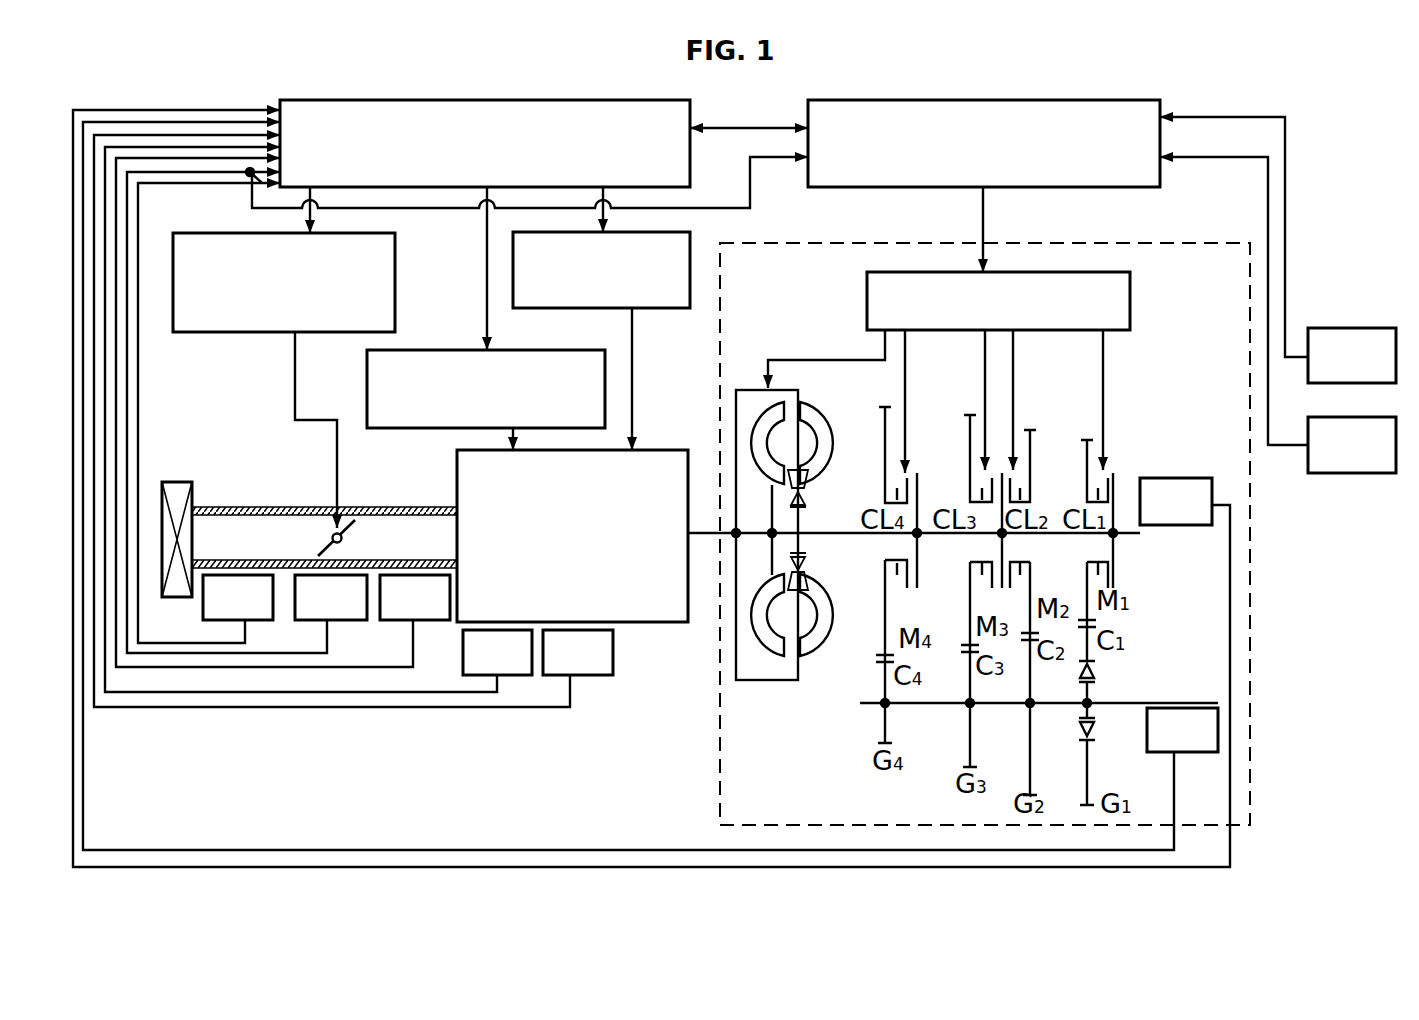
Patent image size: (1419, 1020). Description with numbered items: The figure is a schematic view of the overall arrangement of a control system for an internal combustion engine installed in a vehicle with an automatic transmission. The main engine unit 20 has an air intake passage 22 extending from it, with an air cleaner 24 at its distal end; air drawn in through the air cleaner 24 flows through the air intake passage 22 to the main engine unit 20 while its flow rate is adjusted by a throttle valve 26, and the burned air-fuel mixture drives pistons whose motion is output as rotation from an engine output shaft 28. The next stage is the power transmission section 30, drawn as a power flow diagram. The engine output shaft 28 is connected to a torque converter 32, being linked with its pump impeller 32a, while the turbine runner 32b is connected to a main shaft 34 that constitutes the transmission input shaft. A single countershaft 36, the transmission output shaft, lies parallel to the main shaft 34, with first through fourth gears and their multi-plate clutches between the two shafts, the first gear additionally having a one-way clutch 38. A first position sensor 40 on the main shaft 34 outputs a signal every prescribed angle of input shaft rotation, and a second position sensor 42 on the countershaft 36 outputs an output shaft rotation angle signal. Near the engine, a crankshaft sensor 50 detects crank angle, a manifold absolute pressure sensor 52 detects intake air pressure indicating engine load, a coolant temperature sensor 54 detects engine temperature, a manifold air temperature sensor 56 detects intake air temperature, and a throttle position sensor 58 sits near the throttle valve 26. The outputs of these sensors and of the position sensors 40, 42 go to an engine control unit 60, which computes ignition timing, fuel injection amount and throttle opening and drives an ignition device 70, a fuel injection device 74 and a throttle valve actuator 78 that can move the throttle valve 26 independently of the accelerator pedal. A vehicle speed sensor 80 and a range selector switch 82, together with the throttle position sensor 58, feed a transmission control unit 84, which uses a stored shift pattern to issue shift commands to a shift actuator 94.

The main engine unit 20 is at (642, 452).
The air intake passage 22 is at (228, 507).
The air cleaner 24 is at (178, 482).
The throttle valve 26 is at (352, 531).
The engine output shaft 28 is at (700, 540).
The power transmission section 30 is at (720, 730).
The torque converter 32 is at (775, 505).
The pump impeller 32a is at (814, 420).
The turbine runner 32b is at (760, 483).
The main shaft 34 is at (830, 533).
The countershaft 36 is at (868, 705).
The one-way clutch 38 is at (1094, 735).
The first position sensor 40 is at (1158, 478).
The second position sensor 42 is at (1196, 752).
The crankshaft sensor 50 is at (463, 660).
The manifold absolute pressure sensor 52 is at (392, 613).
The coolant temperature sensor 54 is at (613, 660).
The manifold air temperature sensor 56 is at (203, 612).
The throttle position sensor 58 is at (300, 613).
The engine control unit 60 is at (462, 100).
The ignition device 70 is at (690, 245).
The fuel injection device 74 is at (410, 350).
The throttle valve actuator 78 is at (224, 233).
The vehicle speed sensor 80 is at (1348, 332).
The range selector switch 82 is at (1346, 473).
The transmission control unit 84 is at (988, 100).
The shift actuator 94 is at (1132, 300).